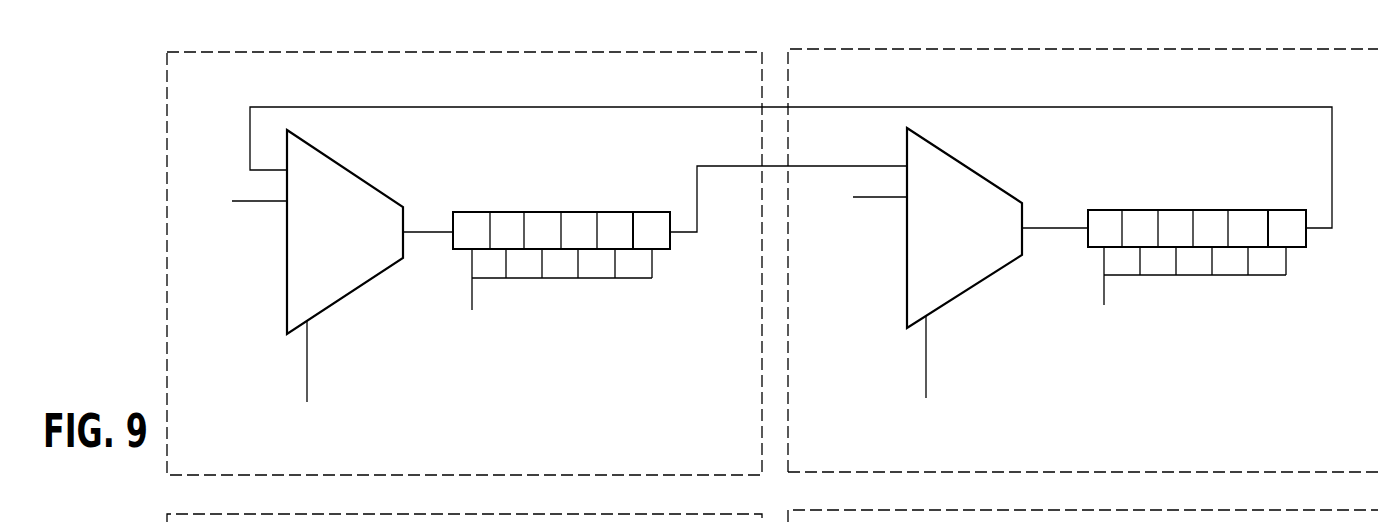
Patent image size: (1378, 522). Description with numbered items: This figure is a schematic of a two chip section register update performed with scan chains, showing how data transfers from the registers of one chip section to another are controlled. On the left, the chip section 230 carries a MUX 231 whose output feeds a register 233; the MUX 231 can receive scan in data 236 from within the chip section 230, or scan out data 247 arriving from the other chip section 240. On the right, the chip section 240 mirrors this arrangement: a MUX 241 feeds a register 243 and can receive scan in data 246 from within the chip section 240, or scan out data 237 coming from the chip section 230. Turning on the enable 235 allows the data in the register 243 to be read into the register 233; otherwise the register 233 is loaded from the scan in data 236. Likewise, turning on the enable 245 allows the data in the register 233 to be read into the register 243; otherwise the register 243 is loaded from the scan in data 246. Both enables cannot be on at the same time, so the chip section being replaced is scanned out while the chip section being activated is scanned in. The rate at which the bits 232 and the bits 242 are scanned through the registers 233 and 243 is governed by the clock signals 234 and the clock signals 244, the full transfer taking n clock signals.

The chip section 230 is at (722, 97).
The MUX 231 is at (287, 290).
The bits 232 is at (472, 212).
The register 233 is at (665, 212).
The clock signals 234 is at (472, 295).
The enable 235 is at (307, 372).
The scan in data 236 is at (251, 201).
The scan out data 237 is at (697, 240).
The chip section 240 is at (1354, 96).
The MUX 241 is at (907, 286).
The bits 242 is at (1106, 210).
The register 243 is at (1300, 210).
The clock signals 244 is at (1104, 292).
The enable 245 is at (926, 369).
The scan in data 246 is at (871, 197).
The scan out data 247 is at (1315, 234).